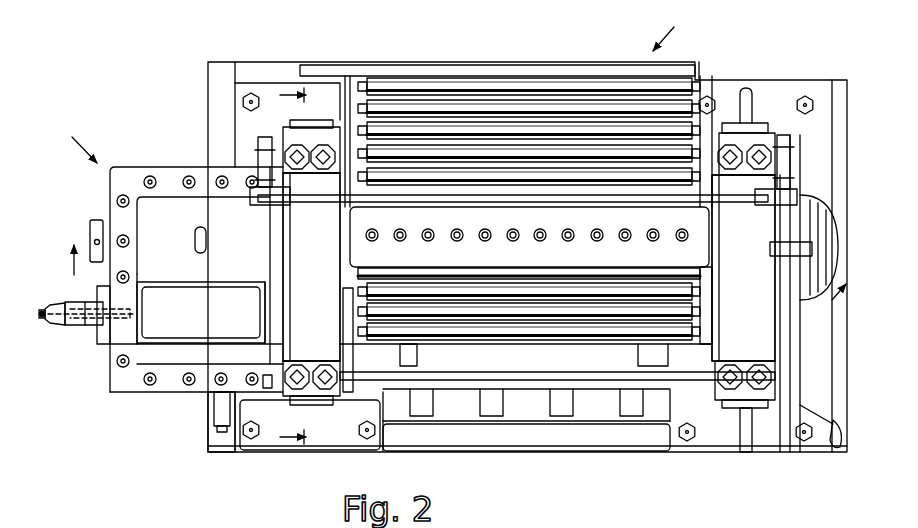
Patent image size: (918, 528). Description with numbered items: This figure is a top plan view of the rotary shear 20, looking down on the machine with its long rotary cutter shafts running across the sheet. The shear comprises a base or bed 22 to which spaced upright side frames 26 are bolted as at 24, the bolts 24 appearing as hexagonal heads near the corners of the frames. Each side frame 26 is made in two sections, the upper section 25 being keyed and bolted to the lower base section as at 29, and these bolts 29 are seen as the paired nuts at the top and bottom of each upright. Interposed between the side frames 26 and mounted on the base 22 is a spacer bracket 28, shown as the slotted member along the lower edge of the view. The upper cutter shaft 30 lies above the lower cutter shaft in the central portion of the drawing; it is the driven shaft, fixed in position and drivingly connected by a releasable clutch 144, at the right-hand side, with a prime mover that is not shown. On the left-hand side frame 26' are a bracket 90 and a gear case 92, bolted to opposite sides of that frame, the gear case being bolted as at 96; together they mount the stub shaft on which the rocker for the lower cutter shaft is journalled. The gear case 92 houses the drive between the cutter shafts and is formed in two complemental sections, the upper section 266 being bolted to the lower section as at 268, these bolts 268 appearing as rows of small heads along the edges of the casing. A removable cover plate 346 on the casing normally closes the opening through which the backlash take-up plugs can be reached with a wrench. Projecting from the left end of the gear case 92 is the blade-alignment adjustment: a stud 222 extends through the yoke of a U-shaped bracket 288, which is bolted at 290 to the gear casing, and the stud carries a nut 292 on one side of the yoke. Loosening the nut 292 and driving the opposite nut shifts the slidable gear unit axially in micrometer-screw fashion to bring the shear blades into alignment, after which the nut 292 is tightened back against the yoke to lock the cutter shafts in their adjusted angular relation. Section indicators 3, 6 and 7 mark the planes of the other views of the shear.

The rotary shear 20 is at (671, 30).
The base or bed 22 is at (221, 446).
The bolts 24 is at (242, 104).
The upper side frame section 25 is at (290, 301).
The side frames 26 is at (529, 270).
The first side frame 26' is at (311, 267).
The spacer bracket 28 is at (527, 410).
The bolts 29 is at (306, 169).
The upper cutter shaft 30 is at (542, 263).
The bracket 90 is at (352, 355).
The gear case 92 is at (118, 350).
The bolts 96 is at (267, 389).
The releasable clutch 144 is at (832, 200).
The stud 222 is at (47, 321).
The upper gear casing section 266 is at (168, 205).
The bolts 268 is at (120, 236).
The U-shaped bracket 288 is at (82, 327).
The bolts 290 is at (72, 332).
The nut 292 is at (55, 306).
The removable cover plate 346 is at (248, 252).
The section line for Fig. 3 is at (285, 267).
The section line for Fig. 6 is at (456, 279).
The section line for Fig. 7 is at (75, 146).